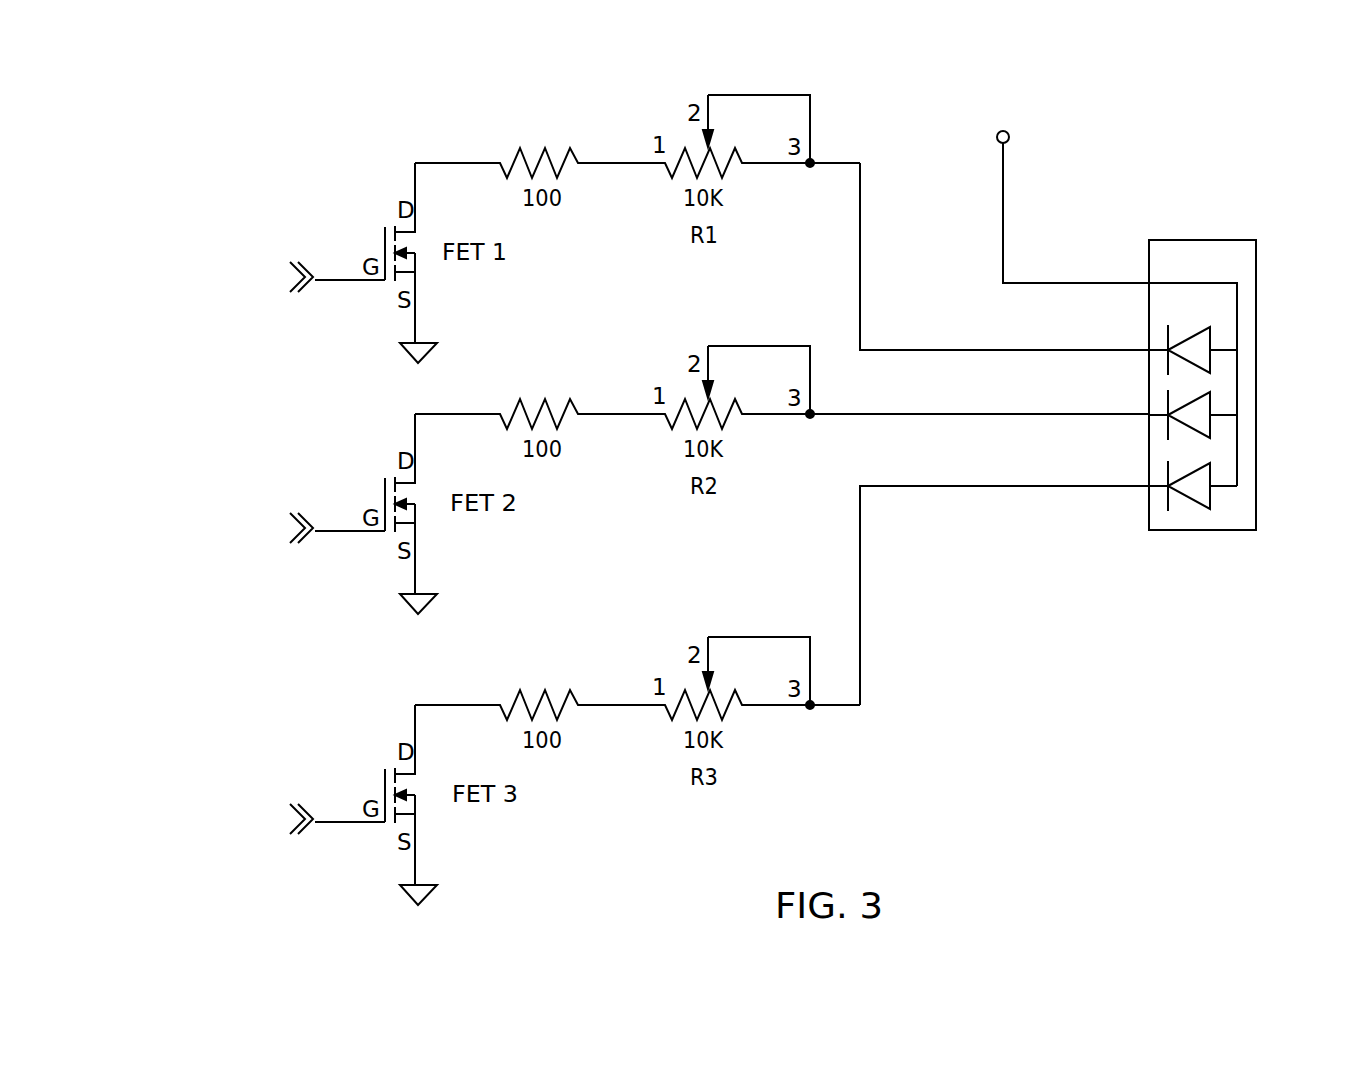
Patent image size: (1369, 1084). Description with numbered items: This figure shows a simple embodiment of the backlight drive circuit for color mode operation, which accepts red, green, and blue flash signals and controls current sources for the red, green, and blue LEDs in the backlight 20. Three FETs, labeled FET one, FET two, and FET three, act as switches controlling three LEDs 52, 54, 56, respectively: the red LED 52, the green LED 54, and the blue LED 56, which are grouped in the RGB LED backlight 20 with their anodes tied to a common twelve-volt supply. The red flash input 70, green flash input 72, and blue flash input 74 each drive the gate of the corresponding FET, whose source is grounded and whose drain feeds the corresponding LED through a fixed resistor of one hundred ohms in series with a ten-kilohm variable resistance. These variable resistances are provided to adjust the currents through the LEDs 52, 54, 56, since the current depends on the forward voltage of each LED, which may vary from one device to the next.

The backlight 20 is at (1123, 733).
The LED 52 is at (1212, 340).
The LED 54 is at (1212, 410).
The LED 56 is at (1212, 478).
The red flash signal input 70 is at (227, 291).
The green flash signal input 72 is at (250, 553).
The blue flash signal input 74 is at (259, 844).